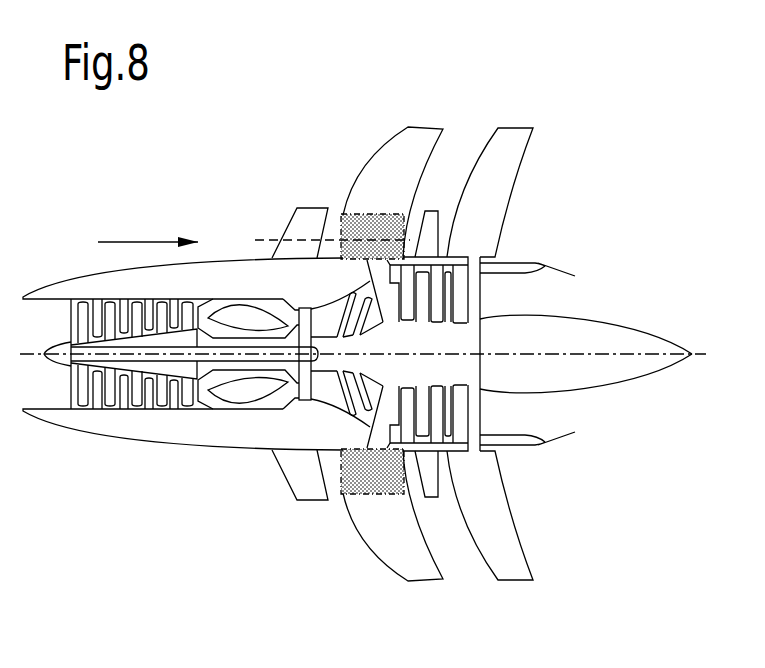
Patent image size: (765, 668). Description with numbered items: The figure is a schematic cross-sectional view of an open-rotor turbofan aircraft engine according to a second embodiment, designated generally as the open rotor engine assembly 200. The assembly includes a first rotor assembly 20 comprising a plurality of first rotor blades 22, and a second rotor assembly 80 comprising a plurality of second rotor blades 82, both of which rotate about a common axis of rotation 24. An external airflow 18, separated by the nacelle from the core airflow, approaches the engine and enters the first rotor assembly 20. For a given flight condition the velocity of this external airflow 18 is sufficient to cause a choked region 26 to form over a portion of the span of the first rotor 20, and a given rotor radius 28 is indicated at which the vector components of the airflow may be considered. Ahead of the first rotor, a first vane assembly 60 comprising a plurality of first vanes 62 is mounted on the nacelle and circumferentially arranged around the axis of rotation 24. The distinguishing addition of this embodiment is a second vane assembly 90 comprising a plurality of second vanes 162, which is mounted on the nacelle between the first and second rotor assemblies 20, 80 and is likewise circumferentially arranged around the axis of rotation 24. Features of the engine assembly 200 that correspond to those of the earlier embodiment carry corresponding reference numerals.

The external airflow 18 is at (148, 229).
The first rotor assembly 20 is at (398, 124).
The first rotor blades 22 is at (373, 135).
The axis of rotation 24 is at (700, 352).
The choked region 26 is at (352, 210).
The rotor radius 28 is at (325, 228).
The first vane assembly 60 is at (276, 212).
The first vanes 62 is at (287, 201).
The second rotor assembly 80 is at (505, 125).
The second rotor blades 82 is at (538, 121).
The second vane assembly 90 is at (441, 194).
The second vanes 162 is at (436, 502).
The open rotor engine assembly 200 is at (598, 196).